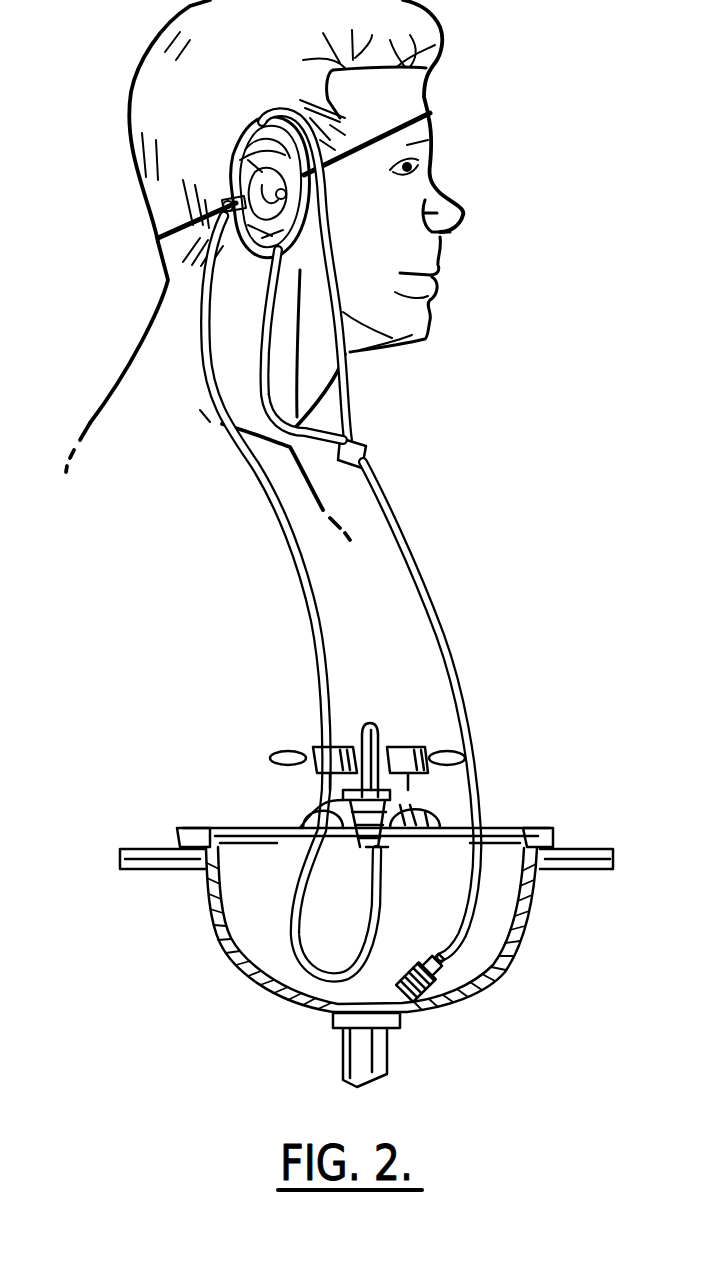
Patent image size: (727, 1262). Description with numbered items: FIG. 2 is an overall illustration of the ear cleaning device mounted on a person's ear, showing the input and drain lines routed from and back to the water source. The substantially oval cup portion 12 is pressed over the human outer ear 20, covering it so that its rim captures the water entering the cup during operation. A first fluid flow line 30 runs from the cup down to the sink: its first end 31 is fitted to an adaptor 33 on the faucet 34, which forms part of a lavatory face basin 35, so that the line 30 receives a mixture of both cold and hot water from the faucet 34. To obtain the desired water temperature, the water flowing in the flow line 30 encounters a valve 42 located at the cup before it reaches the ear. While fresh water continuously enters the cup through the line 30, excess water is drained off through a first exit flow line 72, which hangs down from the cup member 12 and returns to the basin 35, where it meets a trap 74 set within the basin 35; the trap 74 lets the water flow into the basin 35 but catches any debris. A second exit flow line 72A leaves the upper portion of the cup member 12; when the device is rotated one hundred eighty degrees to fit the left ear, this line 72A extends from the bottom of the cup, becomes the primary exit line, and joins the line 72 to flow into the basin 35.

The oval cup portion 12 is at (233, 161).
The human outer ear 20 is at (243, 140).
The first fluid flow line 30 is at (307, 607).
The first end 31 is at (373, 847).
The adaptor 33 is at (306, 820).
The faucet 34 is at (377, 730).
The lavatory face basin 35 is at (280, 970).
The valve 42 is at (210, 247).
The first exit flow line 72 is at (264, 370).
The second exit flow line 72A is at (348, 358).
The trap 74 is at (432, 1003).